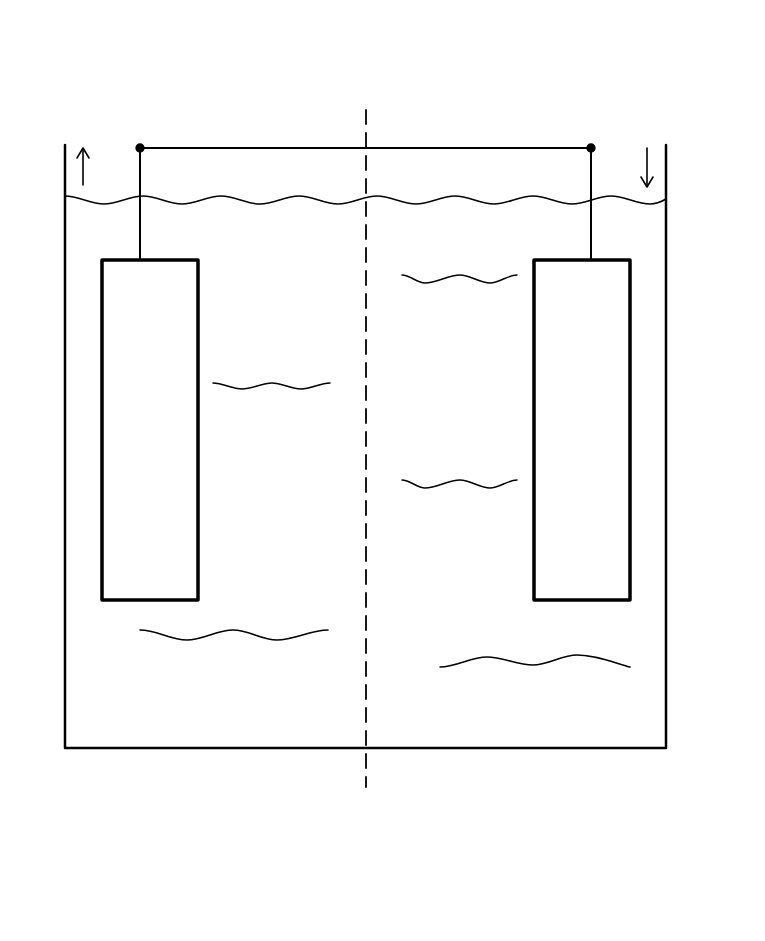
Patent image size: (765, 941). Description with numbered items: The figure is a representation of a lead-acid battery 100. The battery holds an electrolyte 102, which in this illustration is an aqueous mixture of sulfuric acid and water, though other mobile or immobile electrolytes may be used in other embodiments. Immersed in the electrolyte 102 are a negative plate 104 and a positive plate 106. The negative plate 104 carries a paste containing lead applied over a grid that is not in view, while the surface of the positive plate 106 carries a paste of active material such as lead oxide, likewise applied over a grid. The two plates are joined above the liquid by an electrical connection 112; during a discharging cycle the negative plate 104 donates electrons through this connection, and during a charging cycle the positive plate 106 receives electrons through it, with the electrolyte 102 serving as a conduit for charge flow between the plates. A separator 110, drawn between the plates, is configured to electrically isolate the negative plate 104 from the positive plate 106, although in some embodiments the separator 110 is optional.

The lead-acid battery 100 is at (204, 62).
The electrolyte 102 is at (290, 728).
The negative plate 104 is at (178, 594).
The positive plate 106 is at (609, 594).
The separator 110 is at (366, 109).
The electrical connection 112 is at (487, 146).